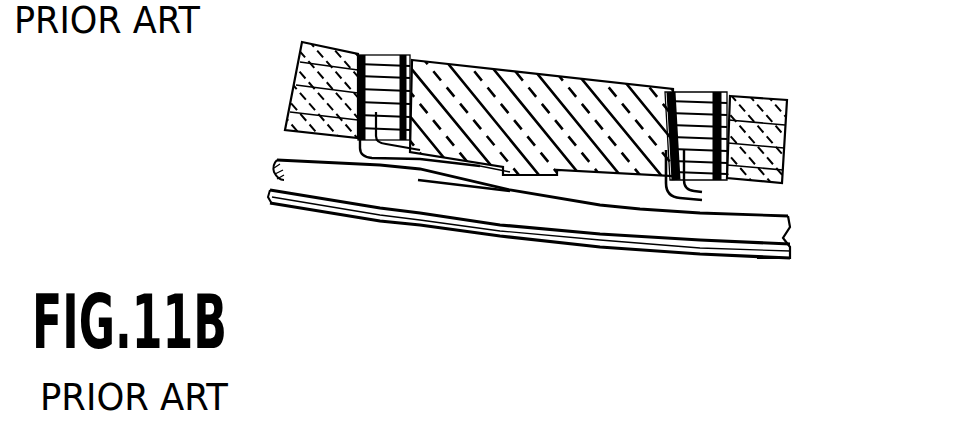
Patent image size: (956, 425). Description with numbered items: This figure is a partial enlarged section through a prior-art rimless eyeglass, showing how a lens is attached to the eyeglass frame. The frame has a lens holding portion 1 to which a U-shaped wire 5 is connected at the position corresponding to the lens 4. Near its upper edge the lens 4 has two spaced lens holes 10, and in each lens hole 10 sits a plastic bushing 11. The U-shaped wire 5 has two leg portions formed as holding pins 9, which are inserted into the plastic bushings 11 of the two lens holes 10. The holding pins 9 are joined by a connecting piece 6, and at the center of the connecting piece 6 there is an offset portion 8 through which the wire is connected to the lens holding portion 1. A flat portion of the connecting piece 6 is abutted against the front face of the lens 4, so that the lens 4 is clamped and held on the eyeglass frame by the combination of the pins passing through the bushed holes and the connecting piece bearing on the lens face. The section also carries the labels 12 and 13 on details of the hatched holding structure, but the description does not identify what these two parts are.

The lens holding portion 1 is at (330, 212).
The lens 4 is at (455, 63).
The U-shaped wire 5 is at (684, 200).
The connecting piece 6 is at (437, 167).
The offset portion 8 is at (510, 190).
The holding pin 9 is at (302, 113).
The lens hole 10 is at (337, 142).
The plastic bushing 11 is at (735, 97).
The side block 12 is at (363, 55).
The projection 13 is at (600, 177).